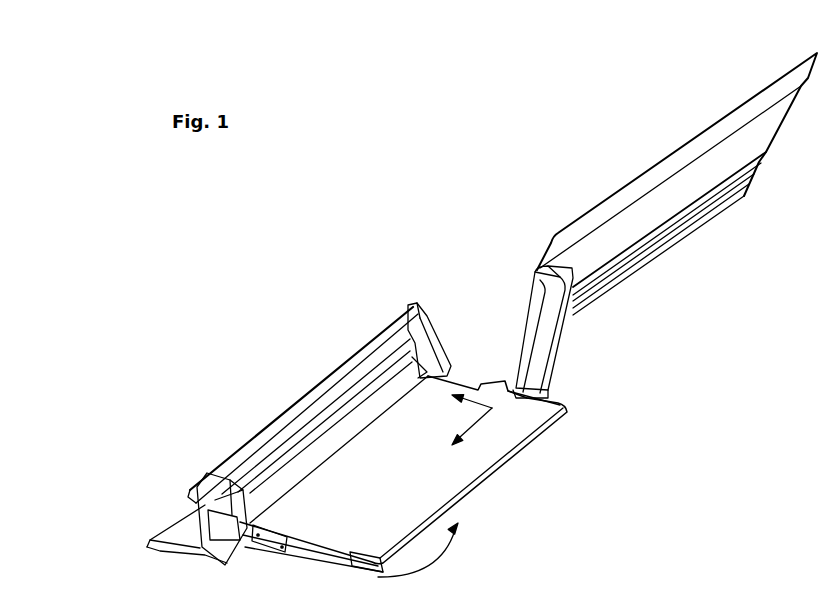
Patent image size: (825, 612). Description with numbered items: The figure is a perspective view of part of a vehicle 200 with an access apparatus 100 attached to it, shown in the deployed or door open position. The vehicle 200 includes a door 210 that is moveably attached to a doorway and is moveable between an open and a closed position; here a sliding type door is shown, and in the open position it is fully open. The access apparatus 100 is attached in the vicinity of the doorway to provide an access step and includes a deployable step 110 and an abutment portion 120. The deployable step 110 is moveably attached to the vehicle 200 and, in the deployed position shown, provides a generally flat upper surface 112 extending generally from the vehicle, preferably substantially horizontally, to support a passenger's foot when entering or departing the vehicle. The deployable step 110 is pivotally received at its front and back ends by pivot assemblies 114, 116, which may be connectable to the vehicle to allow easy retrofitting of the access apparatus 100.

The access apparatus 100 is at (618, 466).
The deployable step 110 is at (400, 479).
The upper surface 112 is at (523, 407).
The pivot assembly 114 is at (235, 548).
The pivot assembly 116 is at (433, 348).
The abutment portion 120 is at (552, 320).
The vehicle 200 is at (140, 515).
The door 210 is at (630, 192).